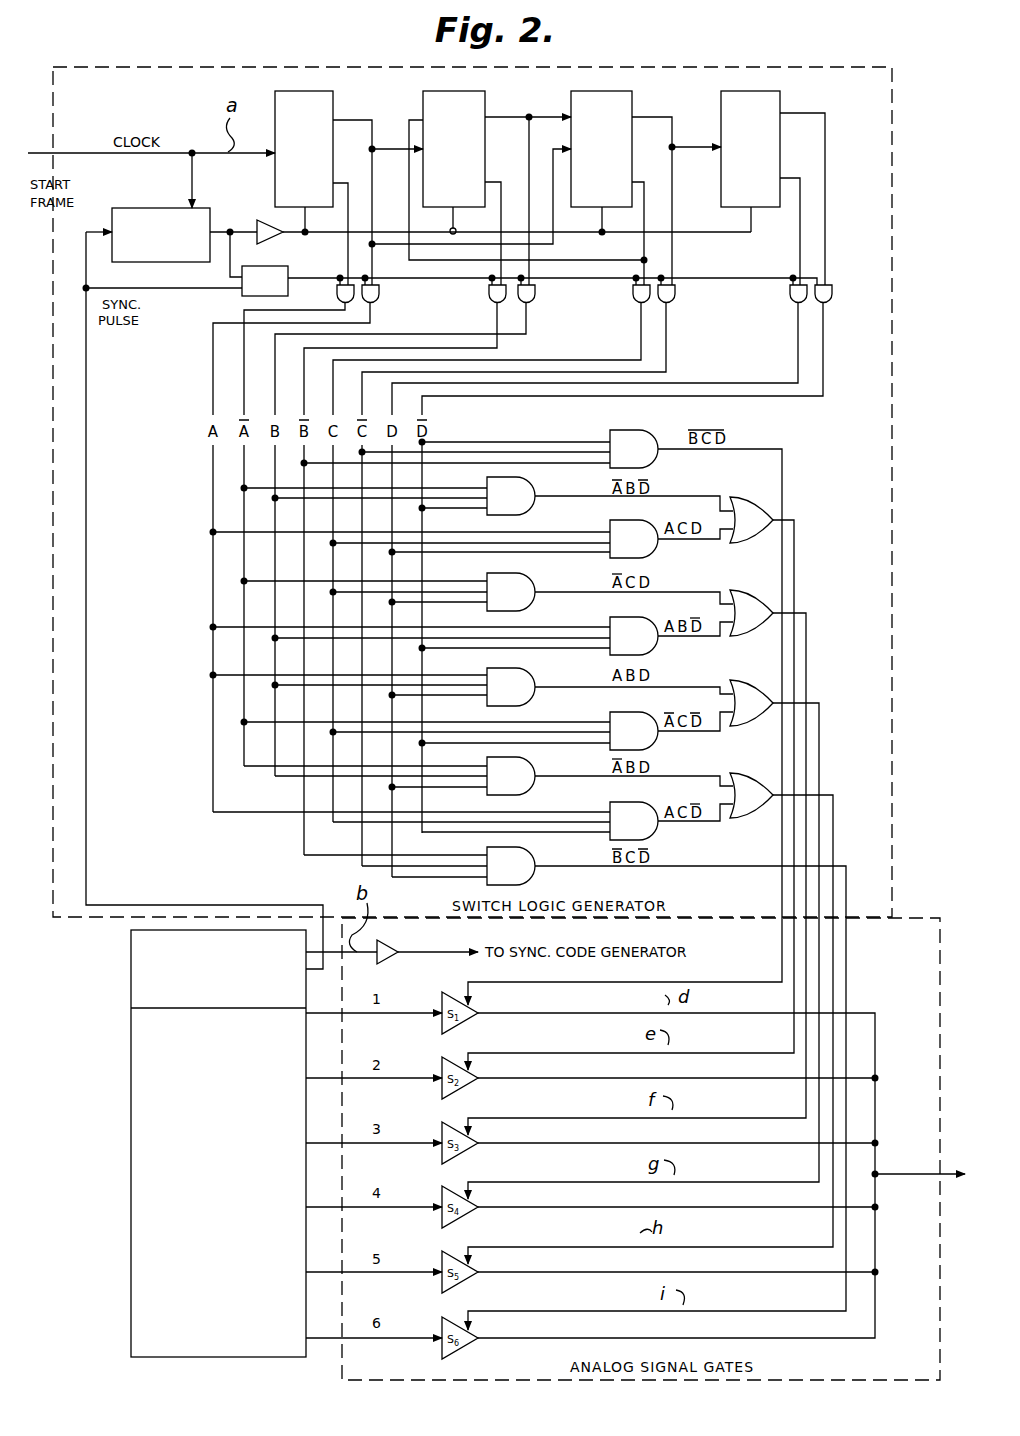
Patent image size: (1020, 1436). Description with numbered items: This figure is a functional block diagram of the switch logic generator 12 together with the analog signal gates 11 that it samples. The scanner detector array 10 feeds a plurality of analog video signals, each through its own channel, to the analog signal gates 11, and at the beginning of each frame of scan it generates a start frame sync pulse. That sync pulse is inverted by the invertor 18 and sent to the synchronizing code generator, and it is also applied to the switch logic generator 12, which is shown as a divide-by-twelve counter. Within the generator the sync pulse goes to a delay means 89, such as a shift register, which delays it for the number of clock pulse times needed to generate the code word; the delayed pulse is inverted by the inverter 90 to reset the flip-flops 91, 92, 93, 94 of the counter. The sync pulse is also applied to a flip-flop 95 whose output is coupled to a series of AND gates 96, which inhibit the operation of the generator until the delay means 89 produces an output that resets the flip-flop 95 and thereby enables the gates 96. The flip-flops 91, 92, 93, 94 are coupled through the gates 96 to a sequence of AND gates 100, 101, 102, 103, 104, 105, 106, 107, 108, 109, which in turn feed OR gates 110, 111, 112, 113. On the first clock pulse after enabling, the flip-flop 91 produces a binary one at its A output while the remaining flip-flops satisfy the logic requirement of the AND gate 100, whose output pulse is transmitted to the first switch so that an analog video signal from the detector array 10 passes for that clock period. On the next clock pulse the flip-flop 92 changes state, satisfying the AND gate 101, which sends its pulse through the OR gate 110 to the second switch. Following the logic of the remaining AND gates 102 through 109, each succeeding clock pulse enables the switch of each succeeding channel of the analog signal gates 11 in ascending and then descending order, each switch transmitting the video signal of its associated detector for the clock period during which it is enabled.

The scanner detector array 10 is at (131, 1208).
The analog signal gates 11 is at (952, 940).
The switch logic generator 12 is at (116, 66).
The invertor 18 is at (388, 964).
The delay means 89 is at (162, 207).
The inverter 90 is at (262, 223).
The flip-flop 91 is at (333, 100).
The flip-flop 92 is at (485, 100).
The flip-flop 93 is at (632, 100).
The flip-flop 94 is at (780, 96).
The flip-flop 95 is at (248, 291).
The AND gates 96 is at (352, 300).
The AND gate 100 is at (640, 430).
The AND gate 101 is at (487, 480).
The AND gate 102 is at (612, 522).
The AND gate 103 is at (487, 576).
The AND gate 104 is at (612, 619).
The AND gate 105 is at (487, 671).
The AND gate 106 is at (612, 714).
The AND gate 107 is at (487, 760).
The AND gate 108 is at (612, 804).
The AND gate 109 is at (527, 878).
The OR gate 110 is at (755, 545).
The OR gate 111 is at (755, 638).
The OR gate 112 is at (755, 728).
The OR gate 113 is at (755, 820).